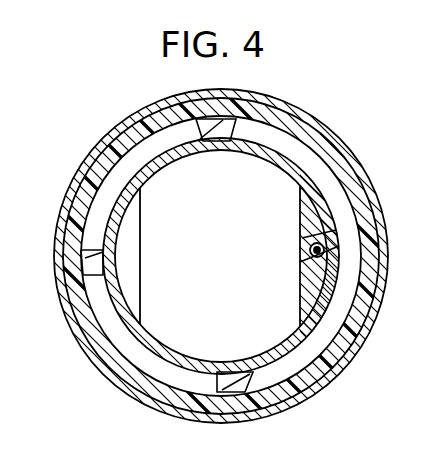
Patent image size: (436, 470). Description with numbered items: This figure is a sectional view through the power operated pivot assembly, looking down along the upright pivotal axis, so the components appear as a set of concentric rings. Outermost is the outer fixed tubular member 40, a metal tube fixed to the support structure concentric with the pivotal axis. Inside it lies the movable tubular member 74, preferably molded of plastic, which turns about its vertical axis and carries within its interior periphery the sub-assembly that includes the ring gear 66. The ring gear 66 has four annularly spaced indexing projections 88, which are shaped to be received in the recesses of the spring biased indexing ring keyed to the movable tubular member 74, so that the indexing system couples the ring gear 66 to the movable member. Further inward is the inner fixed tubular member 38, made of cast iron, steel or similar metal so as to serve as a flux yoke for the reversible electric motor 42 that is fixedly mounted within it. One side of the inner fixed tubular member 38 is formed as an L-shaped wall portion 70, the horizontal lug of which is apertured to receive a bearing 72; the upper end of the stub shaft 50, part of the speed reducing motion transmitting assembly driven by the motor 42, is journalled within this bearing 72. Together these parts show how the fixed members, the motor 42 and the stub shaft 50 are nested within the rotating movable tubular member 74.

The inner fixed tubular member 38 is at (100, 348).
The outer fixed tubular member 40 is at (75, 174).
The reversible electric motor 42 is at (218, 265).
The stub shaft 50 is at (372, 200).
The ring gear 66 is at (150, 147).
The L-shaped wall portion 70 is at (310, 208).
The bearing 72 is at (368, 292).
The movable tubular member 74 is at (301, 378).
The indexing projections 88 is at (56, 236).